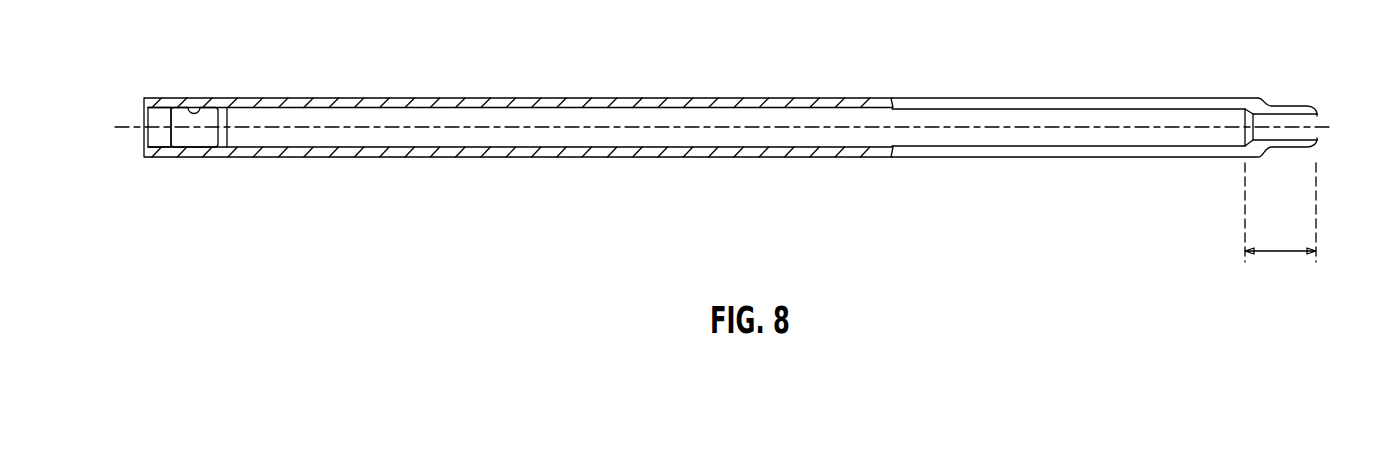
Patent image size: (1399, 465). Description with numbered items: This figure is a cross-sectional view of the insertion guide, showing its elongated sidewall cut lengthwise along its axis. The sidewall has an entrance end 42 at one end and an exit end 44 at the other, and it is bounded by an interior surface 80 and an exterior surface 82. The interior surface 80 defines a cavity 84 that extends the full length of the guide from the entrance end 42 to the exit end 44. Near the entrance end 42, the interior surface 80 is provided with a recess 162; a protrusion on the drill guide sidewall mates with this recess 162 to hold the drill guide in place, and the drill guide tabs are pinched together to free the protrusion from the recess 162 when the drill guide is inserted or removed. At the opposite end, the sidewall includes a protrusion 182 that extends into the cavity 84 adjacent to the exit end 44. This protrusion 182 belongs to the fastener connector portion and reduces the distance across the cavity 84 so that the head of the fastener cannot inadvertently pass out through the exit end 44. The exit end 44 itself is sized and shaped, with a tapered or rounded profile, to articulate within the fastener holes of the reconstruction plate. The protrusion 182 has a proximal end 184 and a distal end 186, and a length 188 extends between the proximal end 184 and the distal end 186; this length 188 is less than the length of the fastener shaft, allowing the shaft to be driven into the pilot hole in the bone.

The entrance end 42 is at (146, 151).
The exit end 44 is at (1318, 113).
The interior surface 80 is at (1056, 104).
The exterior surface 82 is at (980, 97).
The cavity 84 is at (992, 132).
The recess 162 is at (195, 103).
The protrusion 182 is at (1270, 110).
The proximal end 184 is at (1243, 147).
The distal end 186 is at (1318, 140).
The length 188 is at (1279, 253).